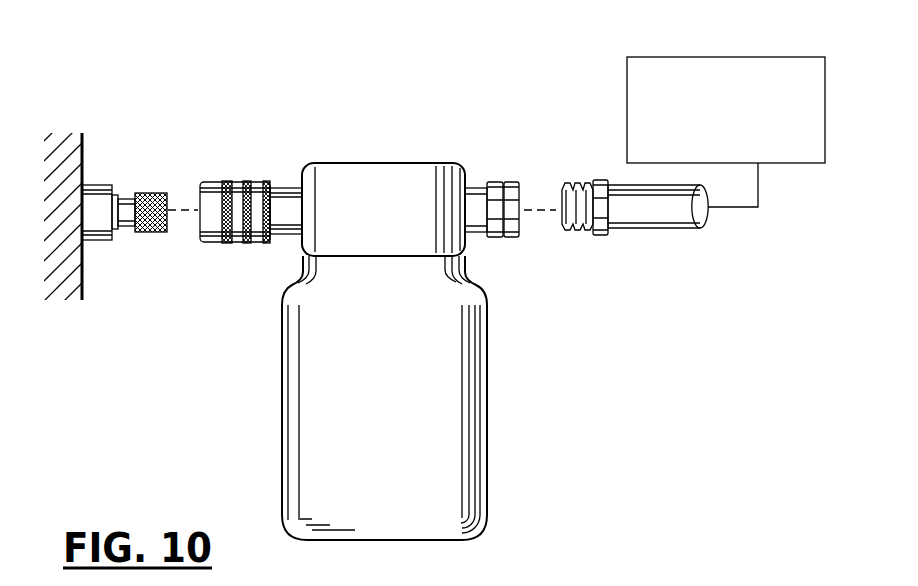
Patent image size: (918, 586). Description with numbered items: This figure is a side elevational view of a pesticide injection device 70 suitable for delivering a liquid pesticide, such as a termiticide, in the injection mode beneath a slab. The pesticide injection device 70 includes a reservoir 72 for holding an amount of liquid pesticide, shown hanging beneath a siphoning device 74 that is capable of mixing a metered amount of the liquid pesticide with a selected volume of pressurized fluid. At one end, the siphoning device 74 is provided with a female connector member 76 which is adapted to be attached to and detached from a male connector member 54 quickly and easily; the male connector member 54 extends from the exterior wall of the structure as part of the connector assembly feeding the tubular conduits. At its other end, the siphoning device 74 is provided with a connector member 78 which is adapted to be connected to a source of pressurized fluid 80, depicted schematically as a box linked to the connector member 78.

The male connector member 54 is at (150, 192).
The pesticide injection device 70 is at (537, 386).
The reservoir 72 is at (282, 372).
The siphoning device 74 is at (437, 164).
The female connector member 76 is at (222, 182).
The connector member 78 is at (510, 238).
The source of pressurized fluid 80 is at (627, 80).